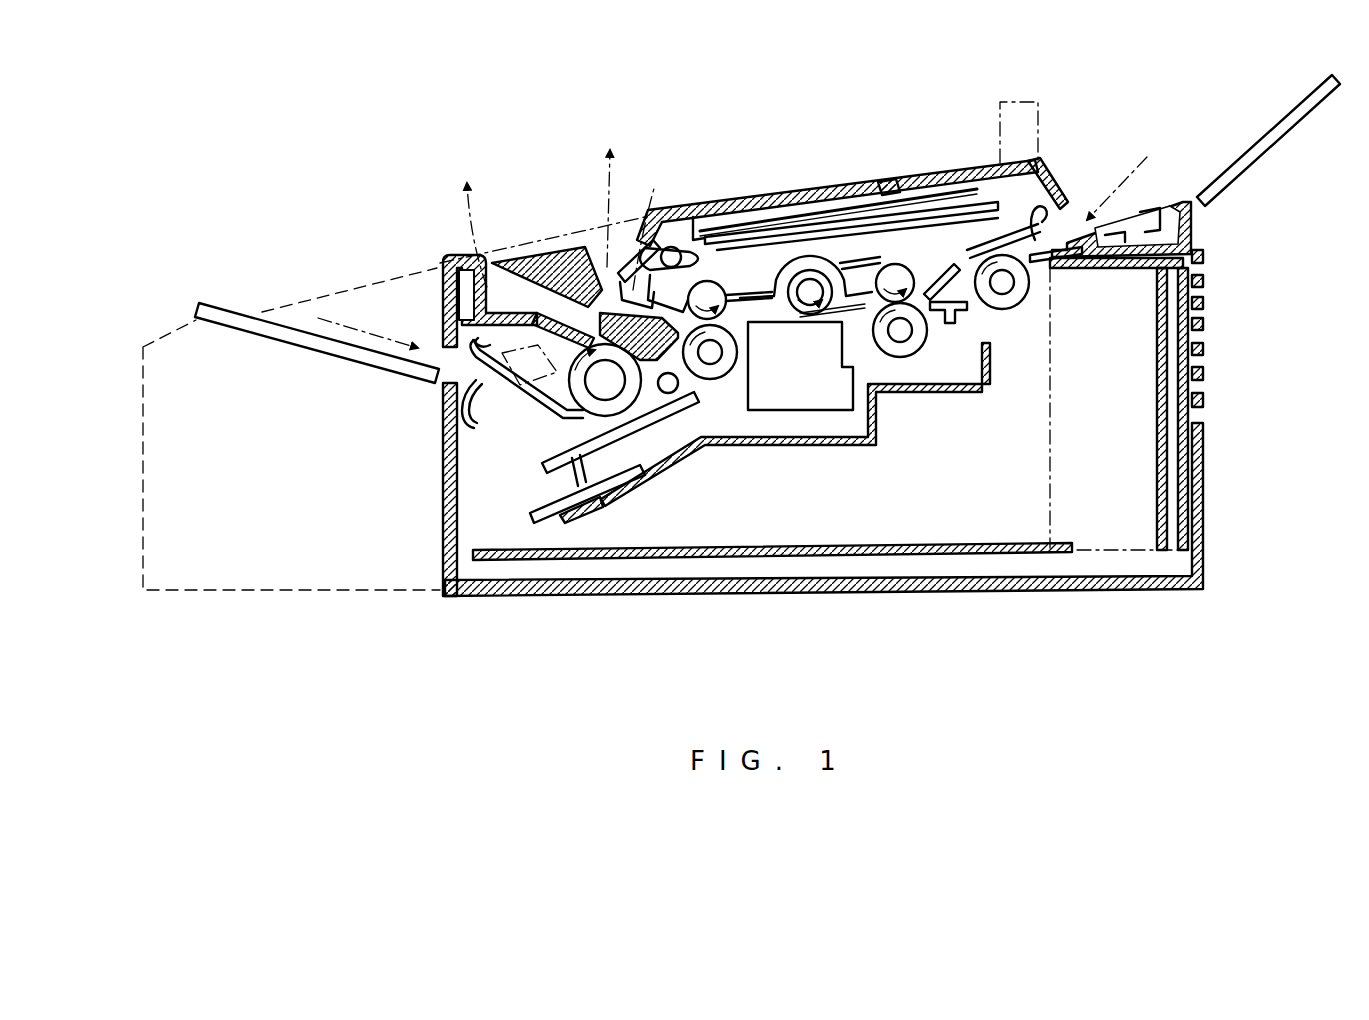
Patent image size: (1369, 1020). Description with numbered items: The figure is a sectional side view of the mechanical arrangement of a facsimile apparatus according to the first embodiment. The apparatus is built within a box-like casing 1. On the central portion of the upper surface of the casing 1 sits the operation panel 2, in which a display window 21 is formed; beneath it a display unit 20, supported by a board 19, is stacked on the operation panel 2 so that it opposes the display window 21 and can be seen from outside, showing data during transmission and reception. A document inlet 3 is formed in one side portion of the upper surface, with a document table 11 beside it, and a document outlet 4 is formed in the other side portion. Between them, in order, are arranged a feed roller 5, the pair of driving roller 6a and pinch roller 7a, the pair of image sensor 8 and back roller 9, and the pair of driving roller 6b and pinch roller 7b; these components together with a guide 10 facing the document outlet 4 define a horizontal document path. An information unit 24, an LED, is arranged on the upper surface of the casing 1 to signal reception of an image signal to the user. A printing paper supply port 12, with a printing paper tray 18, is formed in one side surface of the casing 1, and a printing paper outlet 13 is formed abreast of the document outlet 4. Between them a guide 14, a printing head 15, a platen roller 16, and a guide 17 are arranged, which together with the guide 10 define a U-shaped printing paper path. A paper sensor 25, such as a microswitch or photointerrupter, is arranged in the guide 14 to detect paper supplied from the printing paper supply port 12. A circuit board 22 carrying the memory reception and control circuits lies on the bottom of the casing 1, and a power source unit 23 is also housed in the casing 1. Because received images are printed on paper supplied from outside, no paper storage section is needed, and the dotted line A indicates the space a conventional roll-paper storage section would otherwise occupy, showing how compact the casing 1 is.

The casing 1 is at (770, 598).
The operation panel 2 is at (688, 207).
The document inlet 3 is at (1073, 205).
The document outlet 4 is at (617, 235).
The feed roller 5 is at (1010, 300).
The driving roller 6a is at (922, 345).
The driving roller 6b is at (718, 383).
The pinch roller 7a is at (897, 265).
The pinch roller 7b is at (712, 283).
The image sensor 8 is at (805, 400).
The back roller 9 is at (810, 280).
The guide 10 is at (625, 240).
The document table 11 is at (1232, 172).
The printing paper supply port 12 is at (455, 372).
The printing paper outlet 13 is at (441, 272).
The guide 14 is at (505, 412).
The printing head 15 is at (593, 455).
The platen roller 16 is at (656, 475).
The guide 17 is at (515, 258).
The printing paper tray 18 is at (262, 340).
The board 19 is at (953, 205).
The display unit 20 is at (848, 210).
The display window 21 is at (780, 195).
The circuit board 22 is at (940, 546).
The power source unit 23 is at (1140, 468).
The information unit 24 is at (1008, 100).
The paper sensor 25 is at (571, 372).
The dotted line A is at (213, 592).